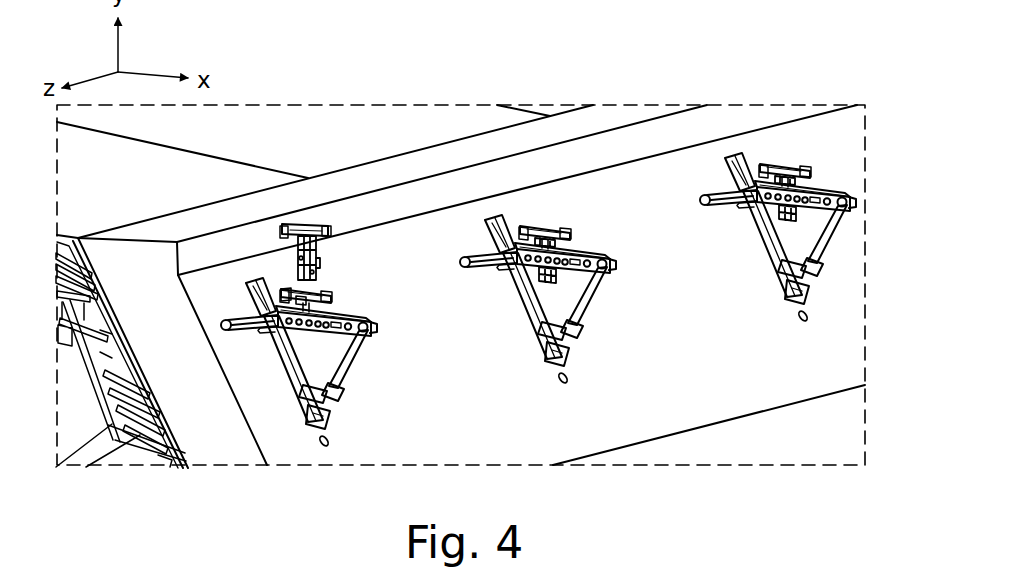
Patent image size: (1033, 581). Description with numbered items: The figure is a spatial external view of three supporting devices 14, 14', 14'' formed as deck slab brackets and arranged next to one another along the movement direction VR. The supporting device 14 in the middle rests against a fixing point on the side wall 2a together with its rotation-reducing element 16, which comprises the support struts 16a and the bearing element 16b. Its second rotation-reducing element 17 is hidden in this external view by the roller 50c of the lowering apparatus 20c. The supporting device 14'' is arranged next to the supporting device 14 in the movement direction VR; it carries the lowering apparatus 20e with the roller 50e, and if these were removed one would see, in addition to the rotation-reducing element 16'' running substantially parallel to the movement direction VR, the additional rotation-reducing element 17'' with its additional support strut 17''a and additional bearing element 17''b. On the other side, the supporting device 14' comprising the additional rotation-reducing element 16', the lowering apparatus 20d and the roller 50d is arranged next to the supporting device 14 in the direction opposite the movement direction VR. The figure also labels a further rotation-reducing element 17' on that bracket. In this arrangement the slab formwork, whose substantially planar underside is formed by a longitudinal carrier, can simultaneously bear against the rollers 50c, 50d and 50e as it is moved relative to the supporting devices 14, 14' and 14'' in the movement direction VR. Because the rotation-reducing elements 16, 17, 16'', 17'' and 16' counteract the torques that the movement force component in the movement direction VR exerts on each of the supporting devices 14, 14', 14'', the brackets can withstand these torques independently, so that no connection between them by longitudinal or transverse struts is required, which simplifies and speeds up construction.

The side wall 2a is at (695, 285).
The movement direction VR is at (268, 127).
The supporting device 14 is at (541, 274).
The supporting device 14' is at (796, 204).
The supporting device 14'' is at (282, 280).
The rotation-reducing element 16 is at (516, 261).
The additional rotation-reducing element 16' is at (763, 164).
The rotation-reducing element 16'' is at (246, 250).
The support struts 16a is at (496, 268).
The bearing element 16b is at (466, 270).
The second rotation-reducing element 17 is at (544, 201).
The connecting element 17' is at (772, 119).
The additional rotation-reducing element 17'' is at (271, 213).
The additional support strut 17''a is at (243, 236).
The additional bearing element 17''b is at (355, 295).
The lowering apparatus 20c is at (557, 281).
The lowering apparatus 20d is at (794, 217).
The lowering apparatus 20e is at (318, 265).
The roller 50c is at (545, 229).
The roller 50d is at (783, 168).
The roller 50e is at (303, 226).